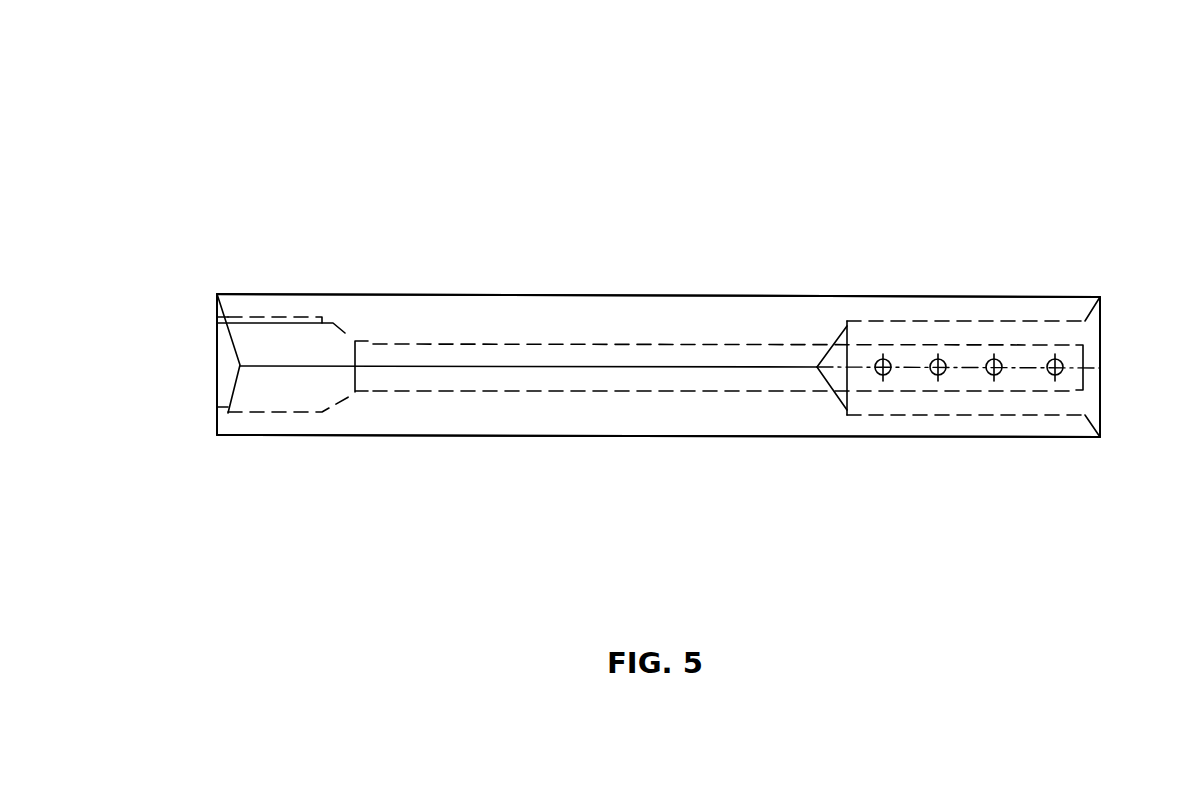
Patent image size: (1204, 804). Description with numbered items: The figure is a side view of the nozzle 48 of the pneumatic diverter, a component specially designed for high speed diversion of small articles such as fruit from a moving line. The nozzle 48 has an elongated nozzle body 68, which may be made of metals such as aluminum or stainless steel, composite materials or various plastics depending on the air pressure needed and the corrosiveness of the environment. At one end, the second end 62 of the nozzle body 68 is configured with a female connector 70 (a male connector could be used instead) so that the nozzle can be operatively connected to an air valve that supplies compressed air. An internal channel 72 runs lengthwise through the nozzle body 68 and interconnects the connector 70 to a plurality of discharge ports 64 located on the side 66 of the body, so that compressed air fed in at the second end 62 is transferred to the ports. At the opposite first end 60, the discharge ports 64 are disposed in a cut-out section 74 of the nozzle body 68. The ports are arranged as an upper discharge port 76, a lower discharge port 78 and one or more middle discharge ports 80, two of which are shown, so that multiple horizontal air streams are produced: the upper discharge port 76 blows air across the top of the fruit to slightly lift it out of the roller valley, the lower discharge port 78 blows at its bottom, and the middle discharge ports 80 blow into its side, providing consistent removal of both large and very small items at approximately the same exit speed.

The nozzle 48 is at (708, 172).
The first end 60 is at (1093, 297).
The second end 62 is at (238, 293).
The discharge ports 64 is at (1068, 368).
The side 66 is at (412, 320).
The nozzle body 68 is at (438, 407).
The female connector 70 is at (275, 387).
The internal channel 72 is at (613, 378).
The cut-out section 74 is at (893, 320).
The upper discharge port 76 is at (885, 376).
The lower discharge port 78 is at (1058, 377).
The middle discharge ports 80 is at (992, 376).